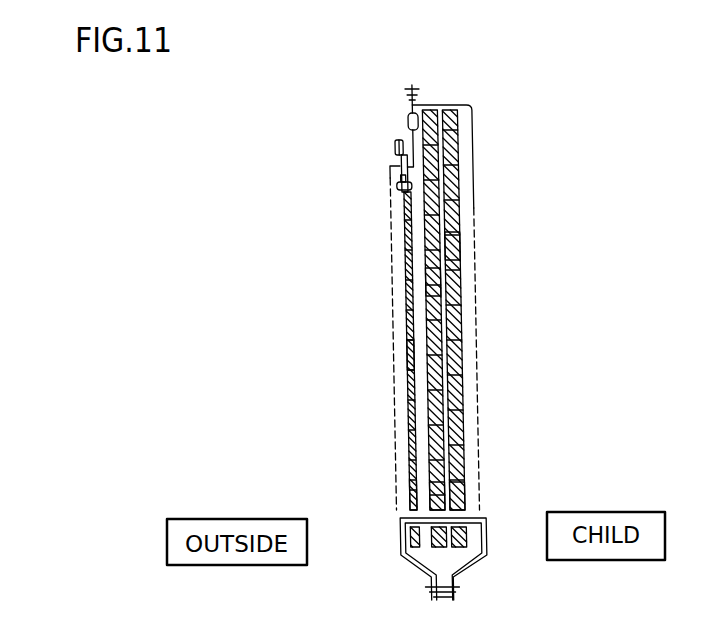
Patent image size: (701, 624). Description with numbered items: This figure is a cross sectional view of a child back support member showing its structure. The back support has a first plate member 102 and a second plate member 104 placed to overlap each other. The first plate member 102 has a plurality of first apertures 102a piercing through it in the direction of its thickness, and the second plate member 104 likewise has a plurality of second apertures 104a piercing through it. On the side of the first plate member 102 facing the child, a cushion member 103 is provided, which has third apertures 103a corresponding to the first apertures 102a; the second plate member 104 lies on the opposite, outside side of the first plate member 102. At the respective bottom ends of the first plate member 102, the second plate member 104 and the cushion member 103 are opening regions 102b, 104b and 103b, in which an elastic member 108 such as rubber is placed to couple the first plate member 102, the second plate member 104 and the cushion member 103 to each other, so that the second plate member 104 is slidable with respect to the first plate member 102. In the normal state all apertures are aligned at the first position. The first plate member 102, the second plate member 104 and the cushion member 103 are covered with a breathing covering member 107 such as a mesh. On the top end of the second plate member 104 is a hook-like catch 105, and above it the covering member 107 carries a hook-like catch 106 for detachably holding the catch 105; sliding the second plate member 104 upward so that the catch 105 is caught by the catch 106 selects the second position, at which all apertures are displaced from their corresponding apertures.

The first plate member 102 is at (438, 182).
The first apertures 102a is at (432, 282).
The opening region 102b is at (446, 492).
The cushion member 103 is at (457, 142).
The third apertures 103a is at (451, 243).
The opening region 103b is at (462, 512).
The second plate member 104 is at (408, 300).
The second apertures 104a is at (409, 353).
The opening region 104b is at (410, 515).
The catch 105 is at (395, 150).
The catch 106 is at (408, 124).
The covering member 107 is at (394, 420).
The elastic member 108 is at (425, 570).